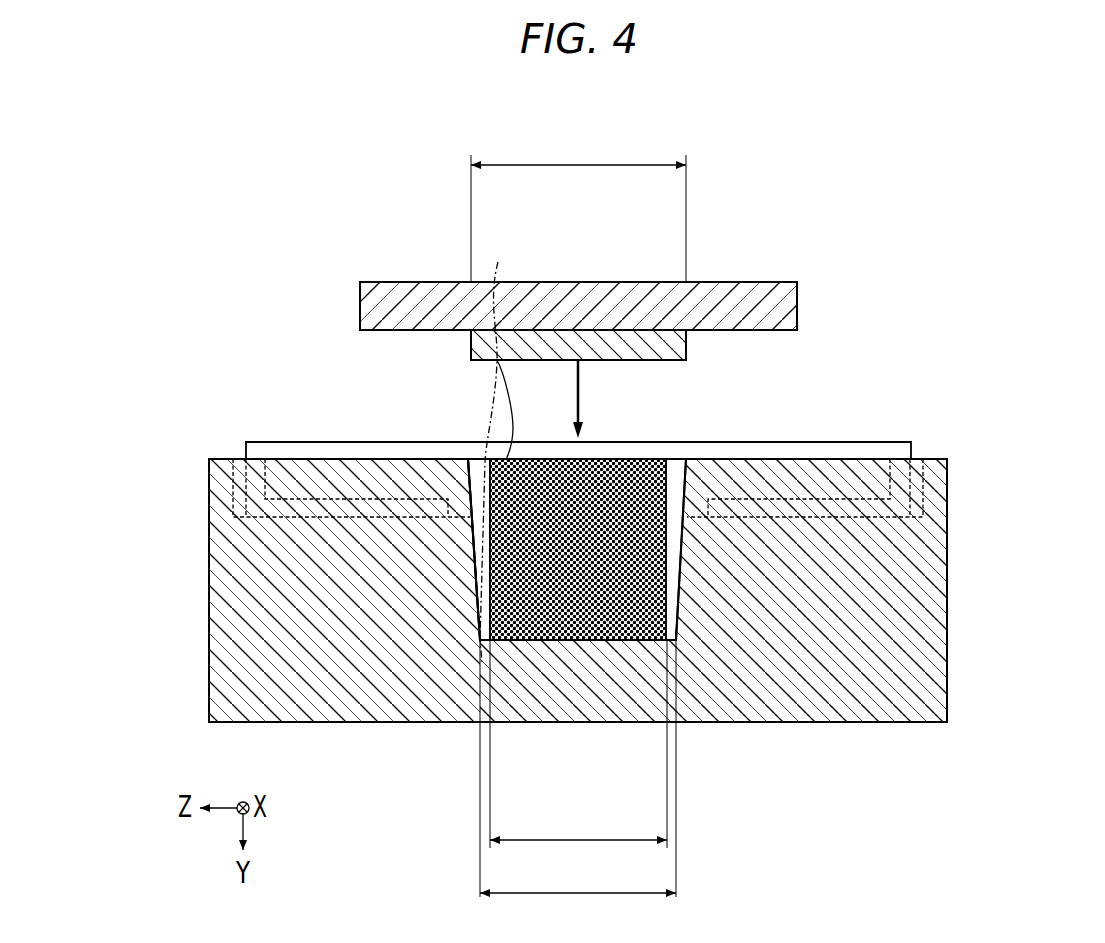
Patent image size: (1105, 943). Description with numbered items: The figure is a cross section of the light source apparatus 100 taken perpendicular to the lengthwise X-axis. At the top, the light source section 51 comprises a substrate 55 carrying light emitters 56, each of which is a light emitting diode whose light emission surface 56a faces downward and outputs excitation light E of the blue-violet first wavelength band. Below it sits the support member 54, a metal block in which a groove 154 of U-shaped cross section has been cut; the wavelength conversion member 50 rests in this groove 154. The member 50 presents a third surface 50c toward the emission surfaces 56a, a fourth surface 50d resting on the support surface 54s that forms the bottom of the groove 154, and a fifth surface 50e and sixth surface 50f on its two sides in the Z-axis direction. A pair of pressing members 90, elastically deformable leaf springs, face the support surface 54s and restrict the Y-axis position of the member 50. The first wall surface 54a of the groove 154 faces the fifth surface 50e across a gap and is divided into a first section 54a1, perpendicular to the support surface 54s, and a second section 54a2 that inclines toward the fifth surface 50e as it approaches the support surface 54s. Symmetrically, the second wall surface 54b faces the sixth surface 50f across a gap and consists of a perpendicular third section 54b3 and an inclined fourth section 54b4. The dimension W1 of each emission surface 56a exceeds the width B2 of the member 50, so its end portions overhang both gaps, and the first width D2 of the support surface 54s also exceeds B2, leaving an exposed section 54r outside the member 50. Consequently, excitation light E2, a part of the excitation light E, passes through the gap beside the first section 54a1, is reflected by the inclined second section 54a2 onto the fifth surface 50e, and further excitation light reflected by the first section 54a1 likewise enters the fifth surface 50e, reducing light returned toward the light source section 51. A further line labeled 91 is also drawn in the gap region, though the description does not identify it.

The light source apparatus 100 is at (554, 266).
The light source section 51 is at (581, 278).
The substrate 55 is at (712, 297).
The light emitters 56 is at (531, 332).
The light emission surface 56a is at (630, 362).
The virtual line 91 is at (496, 445).
The excitation light E is at (579, 378).
The excitation light E2 is at (489, 392).
The dimension W1 is at (578, 204).
The groove 154 is at (477, 466).
The wavelength conversion member 50 is at (578, 588).
The third surface 50c is at (640, 459).
The fourth surface 50d is at (520, 645).
The fifth surface 50e is at (483, 590).
The sixth surface 50f is at (668, 530).
The pressing members 90 is at (889, 430).
The support member 54 is at (576, 599).
The first wall surface 54a is at (276, 642).
The first section 54a1 is at (480, 515).
The second section 54a2 is at (482, 622).
The second wall surface 54b is at (878, 521).
The third section 54b3 is at (677, 465).
The fourth section 54b4 is at (675, 565).
The support surface 54s is at (626, 630).
The exposed section 54r is at (678, 620).
The width B2 is at (578, 758).
The first width D2 is at (578, 786).